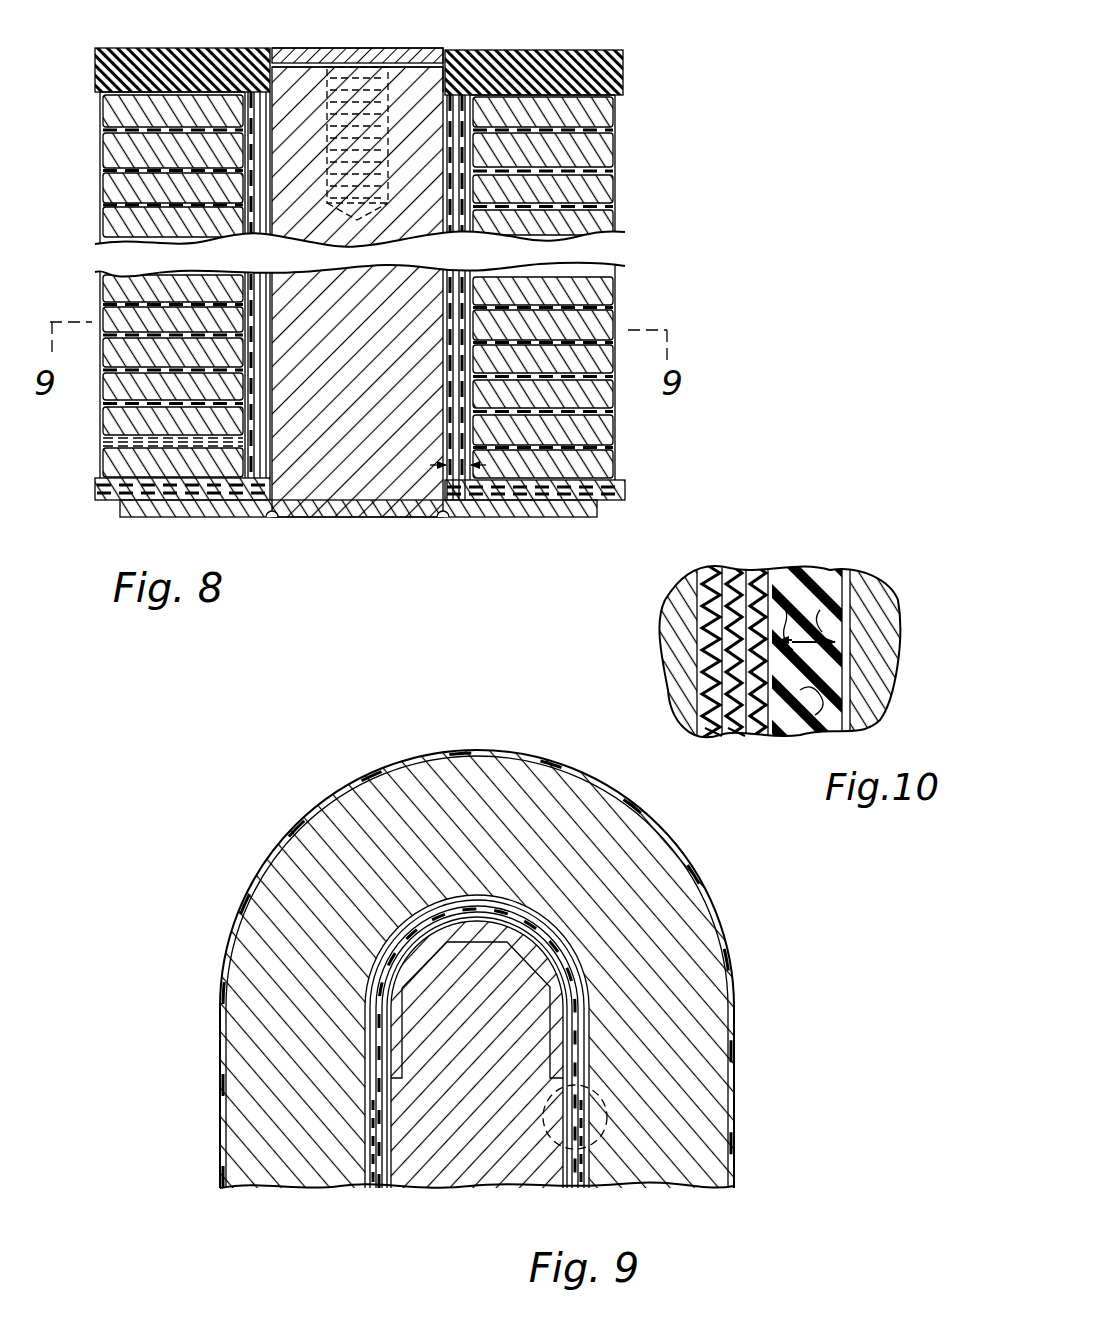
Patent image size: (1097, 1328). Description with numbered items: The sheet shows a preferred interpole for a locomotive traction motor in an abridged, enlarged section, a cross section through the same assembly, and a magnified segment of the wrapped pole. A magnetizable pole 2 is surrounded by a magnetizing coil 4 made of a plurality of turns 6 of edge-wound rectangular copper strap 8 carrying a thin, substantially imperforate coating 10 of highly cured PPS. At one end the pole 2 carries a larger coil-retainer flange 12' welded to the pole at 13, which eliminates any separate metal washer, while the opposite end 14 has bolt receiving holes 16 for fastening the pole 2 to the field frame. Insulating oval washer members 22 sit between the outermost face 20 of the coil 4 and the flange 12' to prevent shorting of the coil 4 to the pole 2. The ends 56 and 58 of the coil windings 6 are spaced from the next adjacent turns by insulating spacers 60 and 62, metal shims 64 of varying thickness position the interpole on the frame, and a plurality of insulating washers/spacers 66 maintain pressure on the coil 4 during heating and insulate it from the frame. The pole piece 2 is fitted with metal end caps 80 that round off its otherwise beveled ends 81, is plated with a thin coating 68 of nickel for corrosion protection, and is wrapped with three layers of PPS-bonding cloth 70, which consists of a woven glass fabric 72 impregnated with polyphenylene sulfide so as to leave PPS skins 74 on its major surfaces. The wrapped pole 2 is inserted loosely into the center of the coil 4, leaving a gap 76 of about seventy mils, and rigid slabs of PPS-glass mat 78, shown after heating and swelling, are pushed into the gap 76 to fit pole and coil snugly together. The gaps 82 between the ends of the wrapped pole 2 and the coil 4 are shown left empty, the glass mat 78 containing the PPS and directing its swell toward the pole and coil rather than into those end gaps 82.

In FIG. 8, the magnetizable pole 2 is at (368, 508).
In FIG. 10, the magnetizable pole 2 is at (668, 669).
In FIG. 9, the magnetizable pole 2 is at (450, 1187).
In FIG. 8, the magnetizing coil 4 is at (88, 226).
In FIG. 10, the magnetizing coil 4 is at (898, 596).
In FIG. 9, the magnetizing coil 4 is at (256, 879).
In FIG. 8, the turns 6 is at (112, 144).
In FIG. 8, the edge-wound rectangular copper strap 8 is at (115, 155).
In FIG. 8, the coating 10 is at (102, 188).
In FIG. 9, the coating 10 is at (232, 941).
In FIG. 8, the flange 12' is at (358, 523).
In FIG. 8, the weld 13 is at (272, 521).
In FIG. 8, the opposite end 14 is at (442, 50).
In FIG. 8, the bolt receiving holes 16 is at (372, 78).
In FIG. 8, the outermost face 20 is at (515, 499).
In FIG. 8, the insulating oval washer members 22 is at (96, 491).
In FIG. 8, the end of coil winding 56 is at (122, 463).
In FIG. 8, the end of coil winding 58 is at (600, 116).
In FIG. 8, the insulating spacer 60 is at (108, 442).
In FIG. 8, the insulating spacer 62 is at (612, 133).
In FIG. 8, the metal shims 64 is at (300, 64).
In FIG. 8, the insulating washers/spacers 66 is at (96, 72).
In FIG. 8, the nickel coating 68 is at (274, 435).
In FIG. 10, the nickel coating 68 is at (700, 633).
In FIG. 9, the nickel coating 68 is at (395, 936).
In FIG. 8, the PPS-bonding cloth 70 is at (272, 368).
In FIG. 10, the PPS-bonding cloth 70 is at (733, 566).
In FIG. 9, the PPS-bonding cloth 70 is at (500, 897).
In FIG. 10, the woven glass fabric 72 is at (740, 736).
In FIG. 10, the PPS skins 74 is at (705, 570).
In FIG. 8, the gap 76 is at (466, 503).
In FIG. 10, the gap 76 is at (845, 600).
In FIG. 8, the PPS-glass mat 78 is at (458, 419).
In FIG. 10, the PPS-glass mat 78 is at (805, 636).
In FIG. 9, the PPS-glass mat 78 is at (376, 1190).
In FIG. 9, the metal end caps 80 is at (472, 936).
In FIG. 9, the beveled ends 81 is at (515, 968).
In FIG. 9, the gaps 82 is at (556, 919).